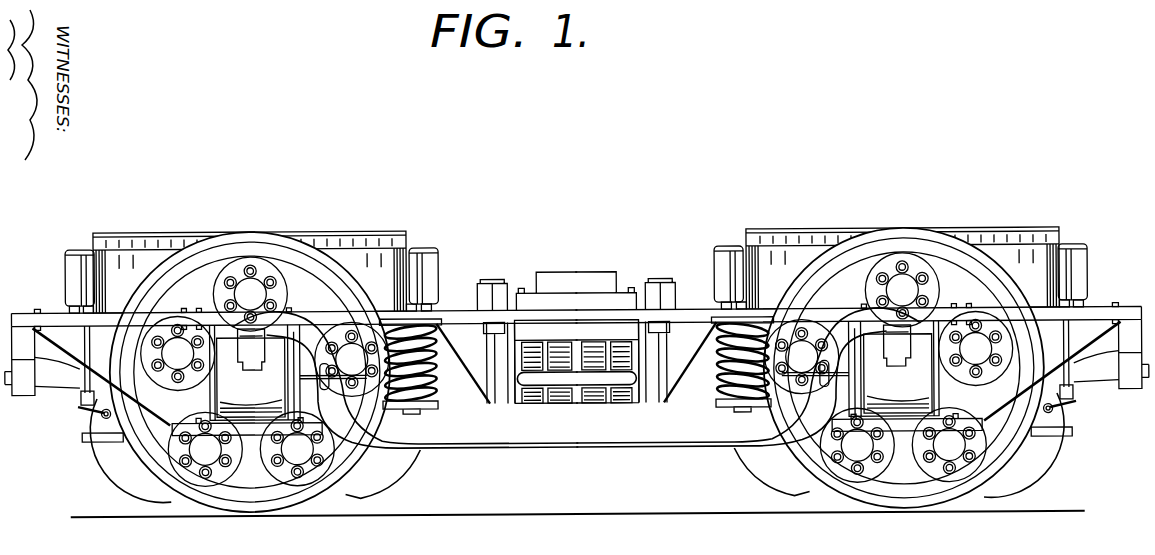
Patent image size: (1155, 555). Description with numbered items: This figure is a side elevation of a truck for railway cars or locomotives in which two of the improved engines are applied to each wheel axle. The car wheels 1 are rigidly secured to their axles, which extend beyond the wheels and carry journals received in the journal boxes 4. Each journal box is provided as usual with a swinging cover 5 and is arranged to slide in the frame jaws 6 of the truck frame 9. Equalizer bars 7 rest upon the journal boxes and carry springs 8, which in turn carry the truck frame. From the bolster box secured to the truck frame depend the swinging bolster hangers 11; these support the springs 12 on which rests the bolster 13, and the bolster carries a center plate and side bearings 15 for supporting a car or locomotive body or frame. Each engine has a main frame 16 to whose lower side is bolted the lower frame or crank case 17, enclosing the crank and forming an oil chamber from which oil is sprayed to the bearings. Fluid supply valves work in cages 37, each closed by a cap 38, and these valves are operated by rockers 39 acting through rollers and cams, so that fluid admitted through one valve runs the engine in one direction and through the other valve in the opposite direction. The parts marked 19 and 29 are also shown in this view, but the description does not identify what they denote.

The car wheels 1 is at (265, 229).
The journal boxes 4 is at (212, 390).
The swinging covers 5 is at (227, 393).
The frame jaws 6 is at (555, 370).
The equalizer bars 7 is at (578, 447).
The springs 8 is at (436, 354).
The truck frame 9 is at (50, 311).
The swinging bolster hangers 11 is at (490, 344).
The springs 12 is at (628, 404).
The bolster 13 is at (563, 330).
The side bearings 15 is at (603, 283).
The engine main frame 16 is at (92, 433).
The lower frame or crank case 17 is at (92, 456).
The brake cylinder 19 is at (205, 229).
The end bracket 29 is at (62, 388).
The cages 37 is at (66, 263).
The cap 38 is at (70, 250).
The rockers 39 is at (78, 408).